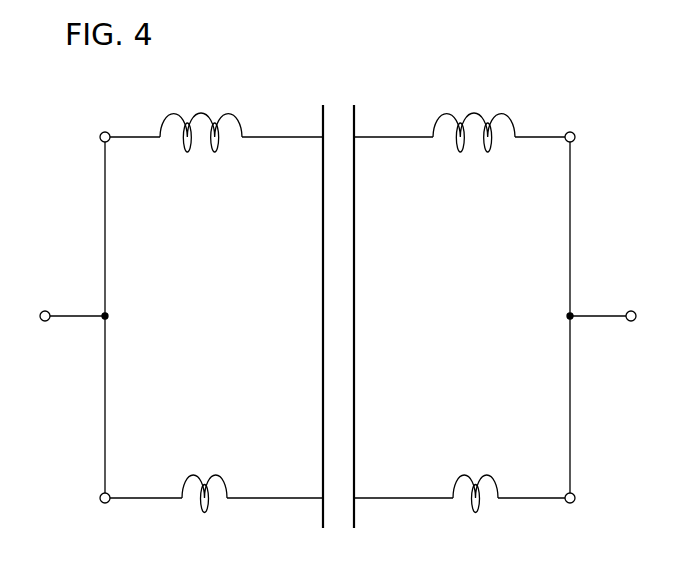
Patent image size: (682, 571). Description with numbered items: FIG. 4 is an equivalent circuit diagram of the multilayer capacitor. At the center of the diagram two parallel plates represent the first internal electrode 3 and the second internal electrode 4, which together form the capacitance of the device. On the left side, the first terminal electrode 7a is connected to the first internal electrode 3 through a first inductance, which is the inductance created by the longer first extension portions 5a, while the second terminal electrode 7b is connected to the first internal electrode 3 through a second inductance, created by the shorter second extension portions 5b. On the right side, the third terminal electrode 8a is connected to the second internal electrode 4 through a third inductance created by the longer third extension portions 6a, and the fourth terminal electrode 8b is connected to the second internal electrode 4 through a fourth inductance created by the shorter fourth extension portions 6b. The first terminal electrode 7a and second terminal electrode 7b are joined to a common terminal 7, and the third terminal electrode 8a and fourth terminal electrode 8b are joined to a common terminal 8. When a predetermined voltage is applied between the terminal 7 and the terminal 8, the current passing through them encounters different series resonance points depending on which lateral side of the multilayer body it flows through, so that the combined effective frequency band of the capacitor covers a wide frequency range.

The first internal electrode 3 is at (322, 254).
The second internal electrode 4 is at (355, 285).
The first extension portions 5a is at (201, 136).
The second extension portions 5b is at (204, 497).
The third extension portions 6a is at (474, 135).
The fourth extension portions 6b is at (475, 497).
The terminal 7 is at (60, 318).
The first terminal electrode 7a is at (103, 121).
The second terminal electrode 7b is at (108, 513).
The terminal 8 is at (614, 318).
The third terminal electrode 8a is at (568, 121).
The fourth terminal electrode 8b is at (570, 514).